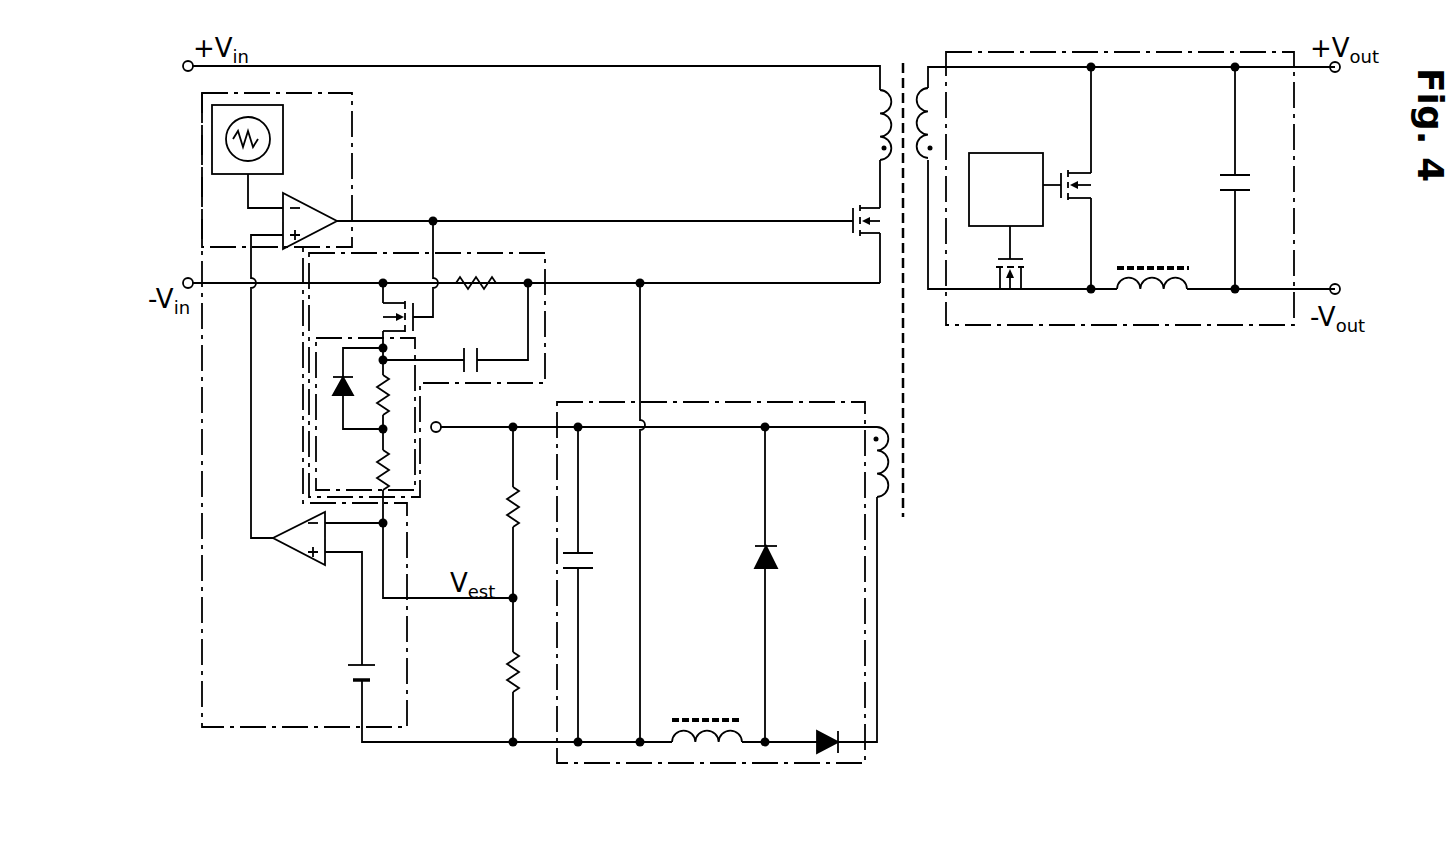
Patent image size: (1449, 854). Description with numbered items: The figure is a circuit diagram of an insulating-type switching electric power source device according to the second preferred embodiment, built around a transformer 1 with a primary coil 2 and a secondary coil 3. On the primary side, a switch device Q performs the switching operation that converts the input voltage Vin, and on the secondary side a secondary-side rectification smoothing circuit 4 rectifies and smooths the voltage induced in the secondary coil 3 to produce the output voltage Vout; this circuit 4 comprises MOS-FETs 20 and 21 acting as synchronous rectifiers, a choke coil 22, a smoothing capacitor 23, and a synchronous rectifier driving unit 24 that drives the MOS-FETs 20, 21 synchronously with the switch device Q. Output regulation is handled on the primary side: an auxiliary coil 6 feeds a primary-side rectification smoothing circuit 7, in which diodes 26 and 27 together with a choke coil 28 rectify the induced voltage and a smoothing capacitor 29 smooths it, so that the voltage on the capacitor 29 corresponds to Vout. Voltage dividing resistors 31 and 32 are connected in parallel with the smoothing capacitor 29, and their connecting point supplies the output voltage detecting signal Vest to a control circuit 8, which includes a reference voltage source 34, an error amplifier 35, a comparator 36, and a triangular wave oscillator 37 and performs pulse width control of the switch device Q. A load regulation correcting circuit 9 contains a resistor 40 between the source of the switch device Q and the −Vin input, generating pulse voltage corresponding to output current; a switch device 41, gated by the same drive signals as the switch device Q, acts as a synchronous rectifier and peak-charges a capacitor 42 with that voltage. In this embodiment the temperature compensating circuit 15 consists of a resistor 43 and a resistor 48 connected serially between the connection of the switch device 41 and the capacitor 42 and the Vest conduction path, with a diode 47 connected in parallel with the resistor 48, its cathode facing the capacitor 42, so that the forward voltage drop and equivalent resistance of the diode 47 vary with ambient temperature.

The transformer 1 is at (902, 62).
The primary coil 2 is at (878, 130).
The secondary coil 3 is at (934, 115).
The secondary-side rectification smoothing circuit 4 is at (1048, 52).
The auxiliary coil 6 is at (890, 455).
The primary-side rectification smoothing circuit 7 is at (690, 402).
The control circuit 8 is at (352, 170).
The load regulation correcting circuit 9 is at (547, 318).
The temperature compensating circuit 15 is at (313, 405).
The MOS-FET 20 is at (1026, 272).
The MOS-FET 21 is at (1092, 188).
The choke coil 22 is at (1150, 293).
The smoothing capacitor 23 is at (1240, 174).
The synchronous rectifier driving unit 24 is at (1010, 153).
The diode 26 is at (779, 554).
The diode 27 is at (822, 728).
The choke coil 28 is at (708, 720).
The smoothing capacitor 29 is at (588, 553).
The voltage dividing resistor 31 is at (505, 510).
The voltage dividing resistor 32 is at (505, 670).
The reference voltage source 34 is at (346, 670).
The error amplifier 35 is at (287, 555).
The comparator 36 is at (305, 200).
The triangular wave oscillator 37 is at (281, 124).
The resistor 40 is at (473, 276).
The switch device 41 is at (383, 317).
The capacitor 42 is at (478, 352).
The resistor 43 is at (390, 470).
The diode 47 is at (330, 385).
The resistor 48 is at (390, 393).
The switch device Q is at (854, 212).